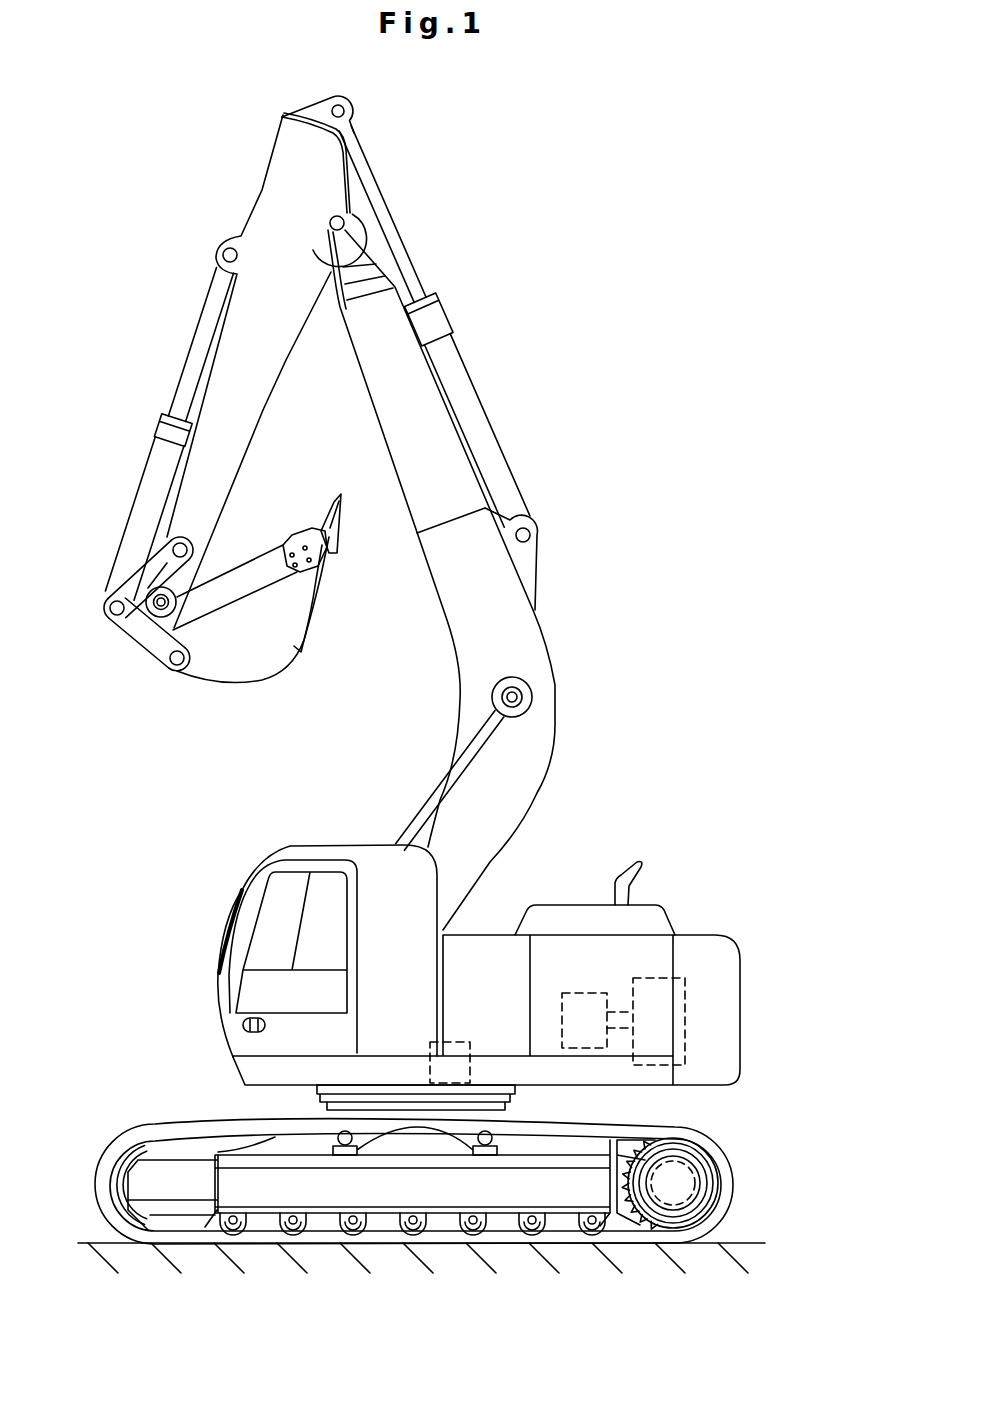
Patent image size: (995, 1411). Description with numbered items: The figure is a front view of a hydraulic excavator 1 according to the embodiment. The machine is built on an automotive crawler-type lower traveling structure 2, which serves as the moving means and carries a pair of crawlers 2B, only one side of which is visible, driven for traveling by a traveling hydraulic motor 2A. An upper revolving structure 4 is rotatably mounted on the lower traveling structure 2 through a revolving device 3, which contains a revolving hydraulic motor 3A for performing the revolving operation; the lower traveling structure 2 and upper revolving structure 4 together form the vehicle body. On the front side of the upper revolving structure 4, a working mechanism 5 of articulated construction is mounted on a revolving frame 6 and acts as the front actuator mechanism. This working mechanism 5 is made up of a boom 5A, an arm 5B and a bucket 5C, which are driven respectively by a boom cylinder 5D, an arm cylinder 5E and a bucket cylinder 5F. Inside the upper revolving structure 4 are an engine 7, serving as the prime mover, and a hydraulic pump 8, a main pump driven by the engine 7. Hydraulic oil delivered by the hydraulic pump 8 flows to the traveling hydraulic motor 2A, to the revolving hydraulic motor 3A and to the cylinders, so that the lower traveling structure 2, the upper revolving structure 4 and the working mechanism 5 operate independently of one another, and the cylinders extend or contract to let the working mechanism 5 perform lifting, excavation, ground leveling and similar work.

The hydraulic excavator 1 is at (494, 283).
The lower traveling structure 2 is at (752, 1146).
The hydraulic motor 2A is at (673, 1203).
The crawlers 2B is at (377, 1240).
The revolving device 3 is at (323, 1089).
The hydraulic motor 3A is at (470, 1068).
The upper revolving structure 4 is at (668, 884).
The working mechanism 5 is at (196, 237).
The boom 5A is at (530, 652).
The arm 5B is at (253, 396).
The bucket 5C is at (264, 667).
The boom cylinder 5D is at (455, 772).
The arm cylinder 5E is at (488, 448).
The bucket cylinder 5F is at (198, 354).
The revolving frame 6 is at (623, 1077).
The engine 7 is at (685, 1012).
The hydraulic pump 8 is at (588, 990).